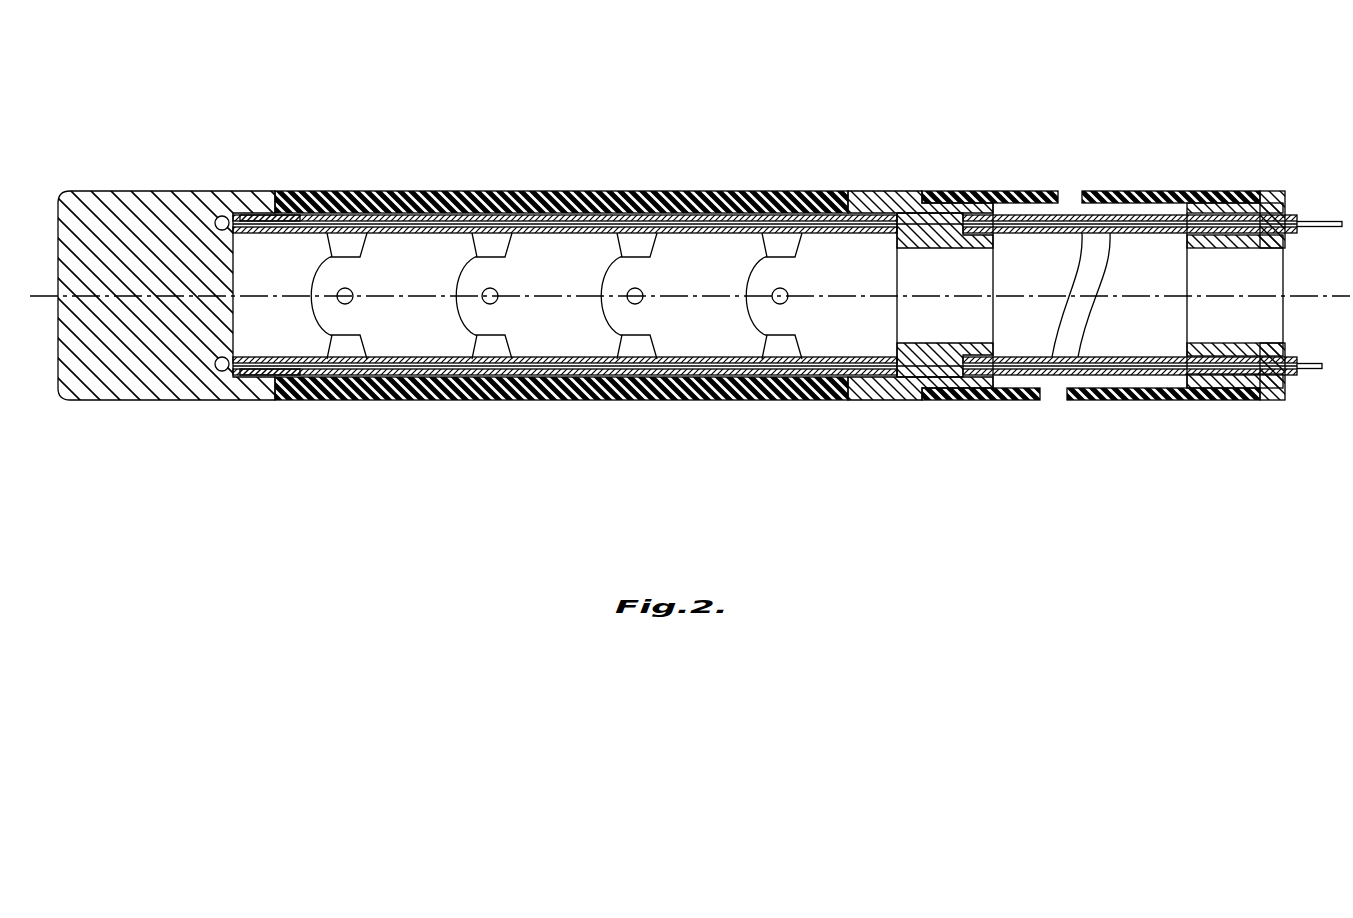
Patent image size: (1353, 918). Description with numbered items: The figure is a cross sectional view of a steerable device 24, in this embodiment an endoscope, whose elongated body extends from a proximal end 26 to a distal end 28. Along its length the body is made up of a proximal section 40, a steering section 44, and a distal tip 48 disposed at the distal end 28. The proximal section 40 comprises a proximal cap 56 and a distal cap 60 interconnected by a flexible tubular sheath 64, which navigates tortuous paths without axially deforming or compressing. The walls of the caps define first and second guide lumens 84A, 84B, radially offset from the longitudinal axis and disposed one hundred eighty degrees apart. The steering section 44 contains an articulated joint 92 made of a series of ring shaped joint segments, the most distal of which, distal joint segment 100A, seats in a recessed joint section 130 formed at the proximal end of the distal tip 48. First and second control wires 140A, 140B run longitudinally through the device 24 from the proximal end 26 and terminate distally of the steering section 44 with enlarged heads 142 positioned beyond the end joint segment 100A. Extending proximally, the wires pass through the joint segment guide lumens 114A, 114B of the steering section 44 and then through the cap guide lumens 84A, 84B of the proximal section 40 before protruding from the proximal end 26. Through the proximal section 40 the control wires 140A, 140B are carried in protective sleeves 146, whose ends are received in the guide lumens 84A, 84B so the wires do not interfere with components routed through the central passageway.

The steerable device 24 is at (515, 95).
The proximal end 26 is at (1233, 188).
The distal end 28 is at (278, 418).
The proximal section 40 is at (1137, 152).
The steering section 44 is at (695, 123).
The distal tip 48 is at (140, 183).
The proximal cap 56 is at (1273, 400).
The distal cap 60 is at (872, 383).
The flexible tubular sheath 64 is at (985, 393).
The first guide lumen 84A is at (932, 201).
The second guide lumen 84B is at (915, 375).
The articulated joint 92 is at (350, 240).
The distal joint segment 100A is at (257, 369).
The first joint segment guide lumen 114A is at (548, 228).
The second joint segment guide lumen 114B is at (412, 372).
The joint section 130 is at (246, 217).
The first control wire 140A is at (1318, 221).
The second control wire 140B is at (1308, 369).
The enlarged head 142 is at (219, 217).
The protective sleeve 146 is at (1037, 215).